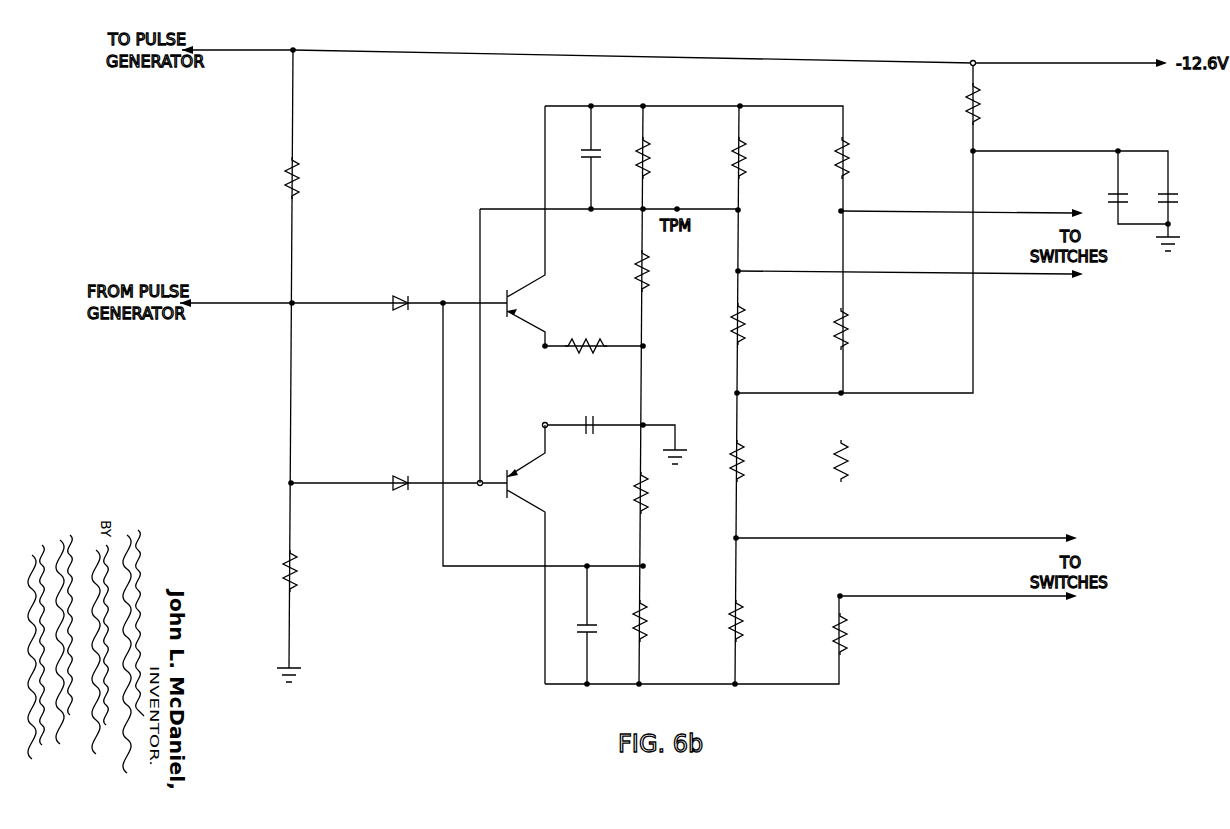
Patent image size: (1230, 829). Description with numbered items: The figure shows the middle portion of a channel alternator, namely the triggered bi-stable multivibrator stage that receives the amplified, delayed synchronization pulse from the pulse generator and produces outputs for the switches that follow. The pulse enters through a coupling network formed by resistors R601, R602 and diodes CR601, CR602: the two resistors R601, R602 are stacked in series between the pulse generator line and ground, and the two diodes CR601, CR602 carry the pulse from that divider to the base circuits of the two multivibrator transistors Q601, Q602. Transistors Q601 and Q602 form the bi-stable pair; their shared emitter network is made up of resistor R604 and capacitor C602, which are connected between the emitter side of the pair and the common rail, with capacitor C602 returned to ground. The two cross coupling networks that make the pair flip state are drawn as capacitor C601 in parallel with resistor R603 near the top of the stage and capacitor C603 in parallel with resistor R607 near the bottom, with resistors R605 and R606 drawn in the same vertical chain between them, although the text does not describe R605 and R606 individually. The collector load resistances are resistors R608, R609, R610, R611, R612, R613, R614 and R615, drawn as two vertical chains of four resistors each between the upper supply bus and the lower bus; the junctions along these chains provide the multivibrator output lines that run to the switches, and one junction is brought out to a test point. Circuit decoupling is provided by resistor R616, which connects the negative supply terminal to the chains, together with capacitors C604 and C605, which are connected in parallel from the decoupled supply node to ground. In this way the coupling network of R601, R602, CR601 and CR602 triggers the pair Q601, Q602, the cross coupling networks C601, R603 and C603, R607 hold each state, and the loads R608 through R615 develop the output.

The resistor R601 is at (299, 172).
The resistor R602 is at (297, 570).
The resistor R603 is at (650, 162).
The resistor R604 is at (575, 340).
The resistor R605 is at (648, 495).
The resistor R606 is at (649, 280).
The resistor R607 is at (647, 620).
The collector load resistance R608 is at (746, 152).
The collector load resistance R609 is at (745, 312).
The collector load resistance R610 is at (744, 449).
The collector load resistance R611 is at (743, 625).
The collector load resistance R612 is at (847, 622).
The collector load resistance R613 is at (848, 450).
The collector load resistance R614 is at (848, 324).
The collector load resistance R615 is at (849, 152).
The decoupling resistor R616 is at (980, 106).
The capacitor C601 is at (611, 144).
The capacitor C602 is at (588, 420).
The capacitor C603 is at (596, 628).
The decoupling capacitor C604 is at (1108, 194).
The decoupling capacitor C605 is at (1158, 195).
The diode CR601 is at (395, 297).
The diode CR602 is at (395, 477).
The transistor Q601 is at (523, 313).
The transistor Q602 is at (516, 494).